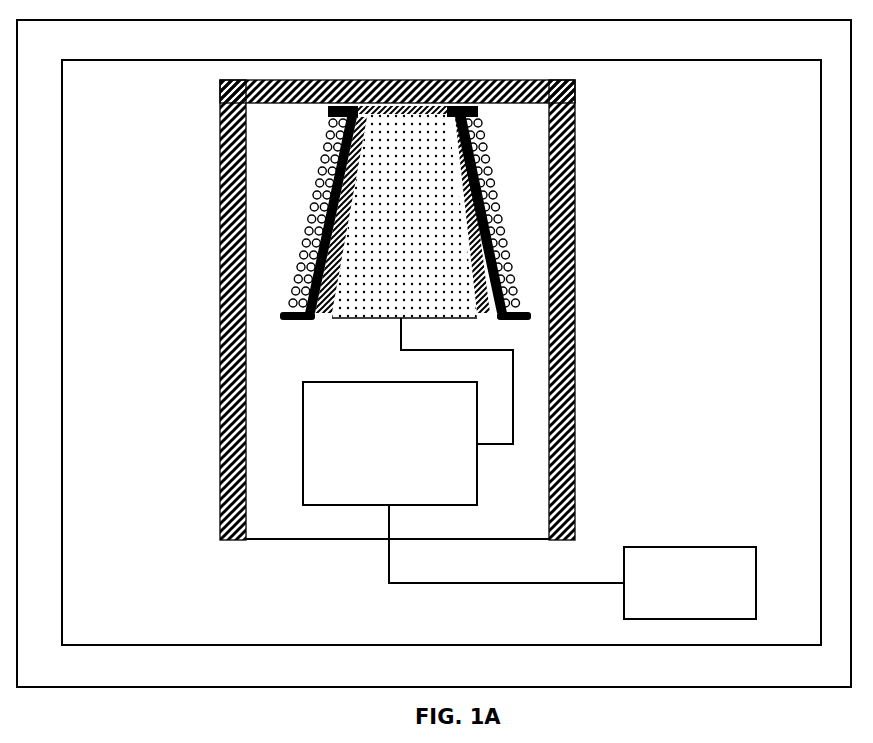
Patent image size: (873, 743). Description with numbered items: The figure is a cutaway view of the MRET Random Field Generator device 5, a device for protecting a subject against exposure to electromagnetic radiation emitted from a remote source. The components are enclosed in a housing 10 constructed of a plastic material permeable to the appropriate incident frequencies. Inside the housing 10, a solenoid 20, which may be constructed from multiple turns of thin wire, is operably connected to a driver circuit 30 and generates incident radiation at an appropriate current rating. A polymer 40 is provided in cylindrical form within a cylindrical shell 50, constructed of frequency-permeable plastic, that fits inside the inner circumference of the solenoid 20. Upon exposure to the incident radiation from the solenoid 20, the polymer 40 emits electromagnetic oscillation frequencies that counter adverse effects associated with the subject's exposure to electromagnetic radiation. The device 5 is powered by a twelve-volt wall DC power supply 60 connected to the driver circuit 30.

The MRET Random Field Generator device 5 is at (248, 542).
The housing 10 is at (222, 450).
The solenoid 20 is at (328, 146).
The driver circuit 30 is at (328, 507).
The polymer 40 is at (447, 302).
The cylindrical shell 50 is at (487, 170).
The power supply 60 is at (655, 555).